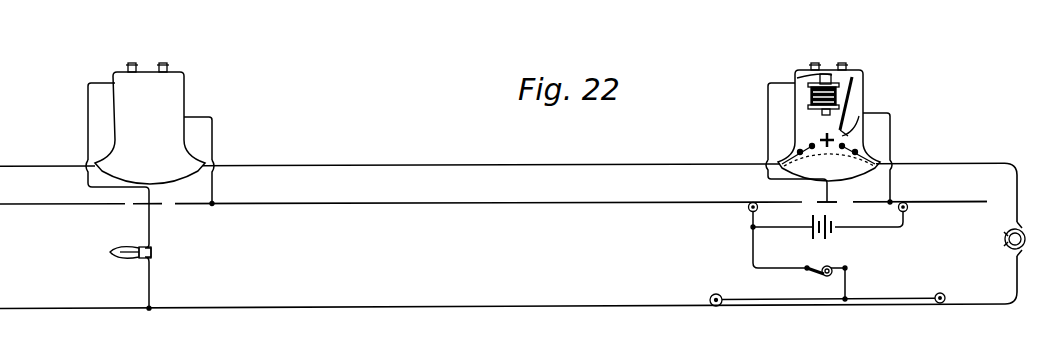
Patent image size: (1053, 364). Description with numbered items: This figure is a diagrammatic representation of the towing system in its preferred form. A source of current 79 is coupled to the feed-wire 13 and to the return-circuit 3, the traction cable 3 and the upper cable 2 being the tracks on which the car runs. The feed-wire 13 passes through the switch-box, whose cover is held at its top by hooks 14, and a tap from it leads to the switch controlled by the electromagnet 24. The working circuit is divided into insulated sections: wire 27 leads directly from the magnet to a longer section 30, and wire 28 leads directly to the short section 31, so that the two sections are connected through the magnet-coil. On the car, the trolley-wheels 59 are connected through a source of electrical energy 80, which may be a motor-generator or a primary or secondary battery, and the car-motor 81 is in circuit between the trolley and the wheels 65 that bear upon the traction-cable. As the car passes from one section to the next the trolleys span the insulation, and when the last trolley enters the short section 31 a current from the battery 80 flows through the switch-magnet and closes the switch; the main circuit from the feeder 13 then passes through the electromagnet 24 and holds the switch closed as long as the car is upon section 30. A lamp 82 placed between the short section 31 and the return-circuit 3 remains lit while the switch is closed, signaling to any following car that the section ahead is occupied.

The track or cable 2 is at (493, 196).
The traction cable 3 is at (504, 310).
The feed-wire 13 is at (508, 225).
The hooks 14 is at (163, 62).
The electromagnet 24 is at (810, 96).
The wire 27 is at (887, 158).
The wire 28 is at (782, 142).
The longer section of the working circuit 30 is at (945, 192).
The short section of the working circuit 31 is at (826, 212).
The trolley-wheel 59 is at (748, 208).
The wheels 65 is at (839, 292).
The source of current 79 is at (1025, 239).
The source of electrical energy 80 is at (807, 232).
The car-motor 81 is at (800, 264).
The lamp 82 is at (121, 256).